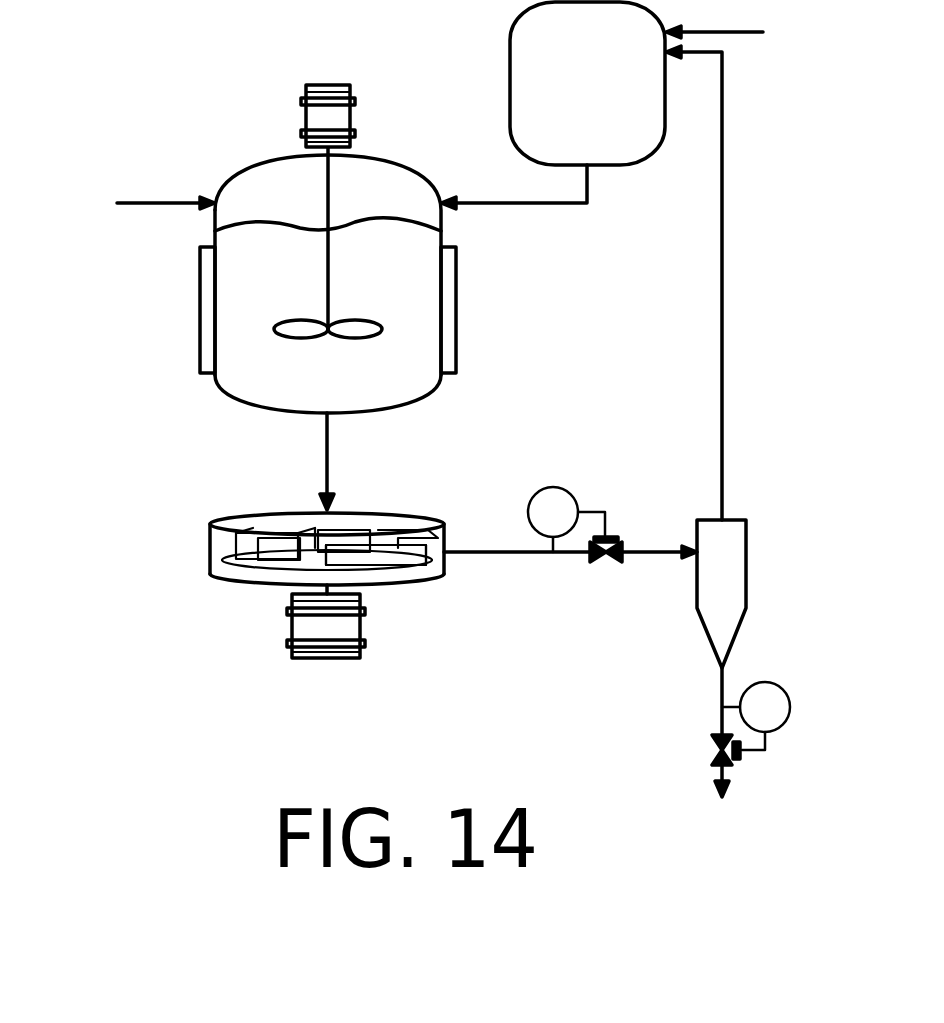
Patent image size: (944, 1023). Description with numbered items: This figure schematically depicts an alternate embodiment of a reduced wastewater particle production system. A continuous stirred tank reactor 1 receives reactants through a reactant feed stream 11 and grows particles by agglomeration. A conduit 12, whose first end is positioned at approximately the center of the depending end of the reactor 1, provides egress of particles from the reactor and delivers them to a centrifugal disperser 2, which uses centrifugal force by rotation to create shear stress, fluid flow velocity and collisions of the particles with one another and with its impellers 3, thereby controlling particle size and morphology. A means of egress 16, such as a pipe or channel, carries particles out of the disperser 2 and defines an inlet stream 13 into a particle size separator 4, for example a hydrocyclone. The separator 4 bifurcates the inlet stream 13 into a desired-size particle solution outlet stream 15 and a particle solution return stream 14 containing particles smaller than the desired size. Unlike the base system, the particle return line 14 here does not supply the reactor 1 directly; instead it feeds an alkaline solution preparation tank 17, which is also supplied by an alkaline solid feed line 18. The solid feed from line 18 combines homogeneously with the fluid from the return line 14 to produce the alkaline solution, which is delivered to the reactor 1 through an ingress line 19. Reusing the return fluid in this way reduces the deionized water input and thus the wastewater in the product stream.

The continuous stirred tank reactor 1 is at (218, 386).
The centrifugal disperser 2 is at (210, 554).
The impellers 3 is at (362, 522).
The particle size separator 4 is at (750, 578).
The reactant feed stream 11 is at (143, 202).
The conduit 12 is at (349, 461).
The inlet stream 13 is at (630, 535).
The particle solution return stream 14 is at (721, 283).
The desired-size particle solution outlet stream 15 is at (728, 732).
The means of egress 16 is at (512, 553).
The alkaline solution preparation tank 17 is at (616, 109).
The alkaline solid feed line 18 is at (739, 34).
The ingress line 19 is at (514, 184).